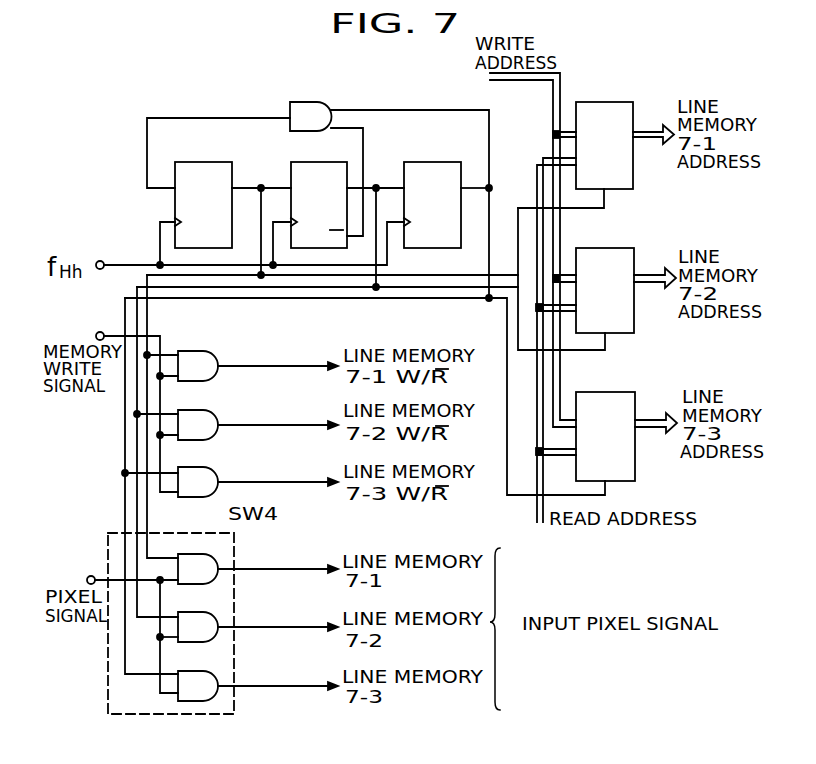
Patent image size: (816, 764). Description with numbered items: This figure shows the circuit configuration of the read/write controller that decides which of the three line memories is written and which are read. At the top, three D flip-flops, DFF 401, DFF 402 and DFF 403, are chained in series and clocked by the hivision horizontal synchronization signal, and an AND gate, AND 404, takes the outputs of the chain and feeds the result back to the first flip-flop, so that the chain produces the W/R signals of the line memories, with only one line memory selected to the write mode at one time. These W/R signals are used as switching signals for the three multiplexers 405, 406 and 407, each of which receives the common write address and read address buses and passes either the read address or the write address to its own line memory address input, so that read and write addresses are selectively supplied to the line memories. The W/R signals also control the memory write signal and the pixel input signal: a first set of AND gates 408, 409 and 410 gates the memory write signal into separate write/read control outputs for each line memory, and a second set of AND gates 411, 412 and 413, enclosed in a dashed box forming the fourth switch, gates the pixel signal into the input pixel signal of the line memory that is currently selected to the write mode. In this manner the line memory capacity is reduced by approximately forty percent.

The DFF 401 is at (192, 162).
The DFF 402 is at (296, 147).
The DFF 403 is at (434, 162).
The AND 404 is at (301, 102).
The multiplexer 405 is at (634, 103).
The multiplexer 406 is at (634, 250).
The multiplexer 407 is at (635, 392).
The AND gate (line memory 7-1 write/read control) 408 is at (213, 350).
The AND gate (line memory 7-2 write/read control) 409 is at (216, 413).
The AND gate (line memory 7-3 write/read control) 410 is at (216, 470).
The AND gate (pixel signal to line memory 7-1) 411 is at (213, 582).
The AND gate (pixel signal to line memory 7-2) 412 is at (213, 640).
The AND gate (pixel signal to line memory 7-3) 413 is at (213, 699).